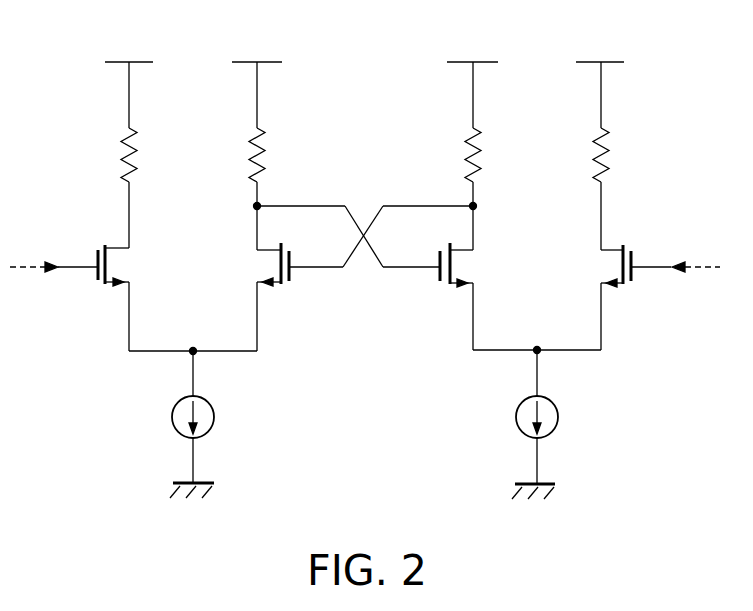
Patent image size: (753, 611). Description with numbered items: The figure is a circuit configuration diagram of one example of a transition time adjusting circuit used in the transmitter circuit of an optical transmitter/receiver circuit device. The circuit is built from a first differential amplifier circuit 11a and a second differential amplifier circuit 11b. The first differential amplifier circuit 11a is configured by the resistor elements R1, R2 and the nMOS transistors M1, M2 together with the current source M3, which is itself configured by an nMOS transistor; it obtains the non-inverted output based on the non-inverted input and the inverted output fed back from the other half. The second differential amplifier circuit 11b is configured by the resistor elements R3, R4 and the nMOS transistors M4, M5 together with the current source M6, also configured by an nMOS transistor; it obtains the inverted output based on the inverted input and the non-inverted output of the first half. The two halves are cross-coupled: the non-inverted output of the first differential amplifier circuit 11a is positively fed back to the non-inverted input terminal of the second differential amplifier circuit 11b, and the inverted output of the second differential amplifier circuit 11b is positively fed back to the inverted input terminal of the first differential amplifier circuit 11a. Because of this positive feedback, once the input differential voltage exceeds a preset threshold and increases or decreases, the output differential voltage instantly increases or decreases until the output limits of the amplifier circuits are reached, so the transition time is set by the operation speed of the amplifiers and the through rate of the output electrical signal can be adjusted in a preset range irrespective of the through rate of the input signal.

The first differential amplifier circuit 11a is at (192, 88).
The second differential amplifier circuit 11b is at (535, 88).
The resistor element R1 is at (113, 155).
The resistor element R2 is at (272, 156).
The resistor element R3 is at (457, 156).
The resistor element R4 is at (615, 156).
The nMOS transistor M1 is at (93, 298).
The nMOS transistor M2 is at (300, 297).
The current source M3 is at (177, 417).
The nMOS transistor M4 is at (428, 296).
The nMOS transistor M5 is at (636, 297).
The current source M6 is at (520, 417).